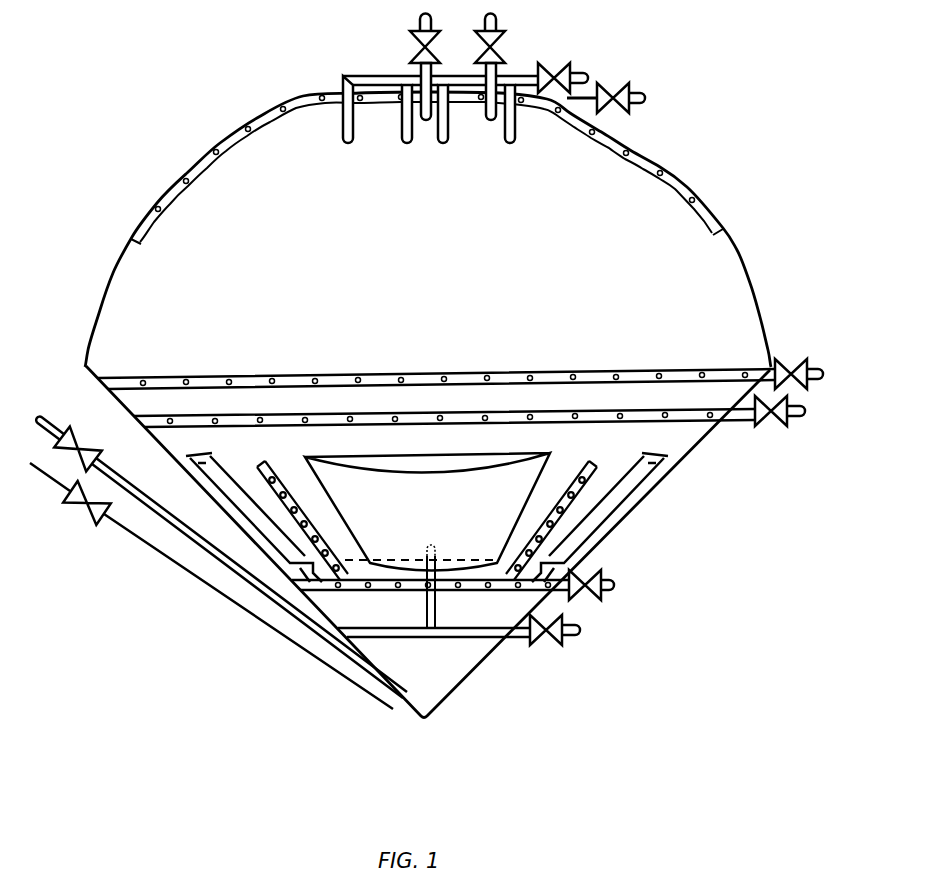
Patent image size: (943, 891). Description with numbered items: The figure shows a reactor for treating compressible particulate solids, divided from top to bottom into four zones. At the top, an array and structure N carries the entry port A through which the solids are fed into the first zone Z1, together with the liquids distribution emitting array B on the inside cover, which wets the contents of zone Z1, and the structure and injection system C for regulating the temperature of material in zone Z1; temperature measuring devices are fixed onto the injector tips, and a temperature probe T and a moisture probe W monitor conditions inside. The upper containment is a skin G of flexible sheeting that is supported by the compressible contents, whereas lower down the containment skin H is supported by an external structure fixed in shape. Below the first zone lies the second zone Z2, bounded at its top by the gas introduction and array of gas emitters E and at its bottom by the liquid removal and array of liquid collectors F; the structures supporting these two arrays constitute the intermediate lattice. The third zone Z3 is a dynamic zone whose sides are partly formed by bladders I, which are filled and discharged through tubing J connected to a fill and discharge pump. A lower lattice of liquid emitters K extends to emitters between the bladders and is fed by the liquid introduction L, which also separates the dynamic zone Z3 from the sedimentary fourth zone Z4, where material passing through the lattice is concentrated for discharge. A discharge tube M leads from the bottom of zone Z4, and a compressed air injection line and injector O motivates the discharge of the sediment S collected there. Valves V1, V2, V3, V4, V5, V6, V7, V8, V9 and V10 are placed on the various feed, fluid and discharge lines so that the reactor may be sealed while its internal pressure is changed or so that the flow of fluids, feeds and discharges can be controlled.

The entry port A is at (402, 23).
The liquids distribution emitting array B is at (645, 103).
The temperature regulation injection system C is at (583, 68).
The gas introduction and array of gas emitters E is at (824, 378).
The liquid removal and array of liquid collectors F is at (807, 414).
The flexible skin of containment G is at (427, 170).
The fixed-shape skin of containment H is at (436, 517).
The bladders I is at (427, 512).
The tubing to bladders J is at (580, 630).
The lower lattice of liquid emitters K is at (422, 535).
The liquid introduction to emitter lattice L is at (612, 594).
The discharge tube M is at (249, 578).
The array and structure N is at (420, 95).
The compressed air injection line and injector O is at (203, 586).
The sediment S is at (428, 542).
The temperature probe T is at (441, 170).
The moisture probe W is at (441, 184).
The valve V1 is at (437, 67).
The valve V2 is at (505, 67).
The valve V3 is at (563, 63).
The valve V4 is at (607, 82).
The valve V5 is at (792, 357).
The valve V6 is at (773, 430).
The valve V7 is at (600, 575).
The valve V8 is at (549, 648).
The valve V9 is at (65, 437).
The valve V10 is at (83, 518).
The zone 1 Z1 is at (428, 229).
The zone 2 Z2 is at (436, 398).
The zone 3 Z3 is at (409, 529).
The zone 4 Z4 is at (430, 625).